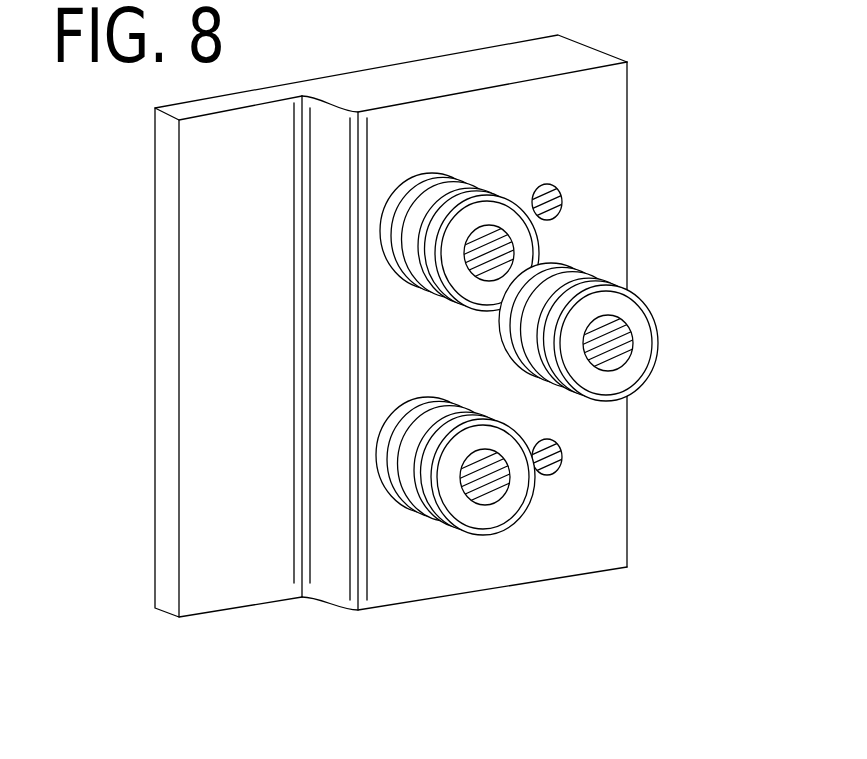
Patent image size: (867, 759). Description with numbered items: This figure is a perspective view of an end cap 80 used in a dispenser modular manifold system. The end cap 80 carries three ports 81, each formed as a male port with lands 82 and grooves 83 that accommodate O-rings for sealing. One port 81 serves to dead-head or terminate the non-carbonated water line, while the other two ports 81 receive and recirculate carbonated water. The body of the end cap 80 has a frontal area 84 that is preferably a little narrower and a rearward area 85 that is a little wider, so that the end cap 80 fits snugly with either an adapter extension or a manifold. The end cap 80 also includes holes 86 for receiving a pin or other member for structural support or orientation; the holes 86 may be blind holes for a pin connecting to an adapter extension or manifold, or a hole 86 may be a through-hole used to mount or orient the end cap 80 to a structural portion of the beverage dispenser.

The end cap 80 is at (446, 345).
The port 81 is at (618, 315).
The land 82 is at (588, 272).
The groove 83 is at (646, 297).
The frontal area 84 is at (240, 602).
The rearward area 85 is at (420, 598).
The hole 86 is at (563, 200).